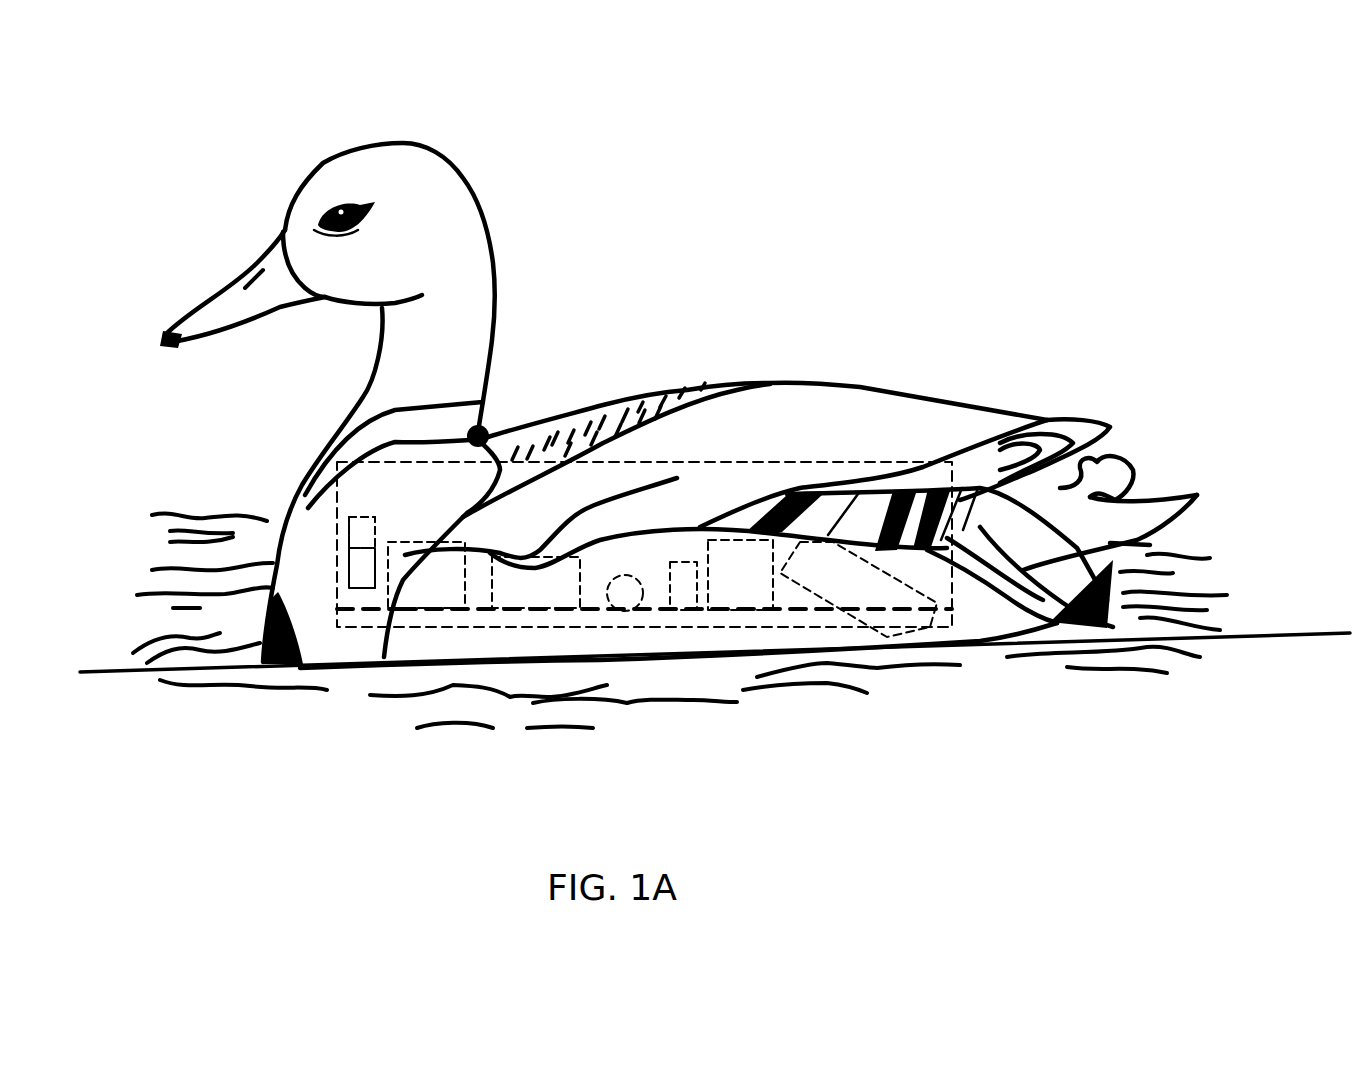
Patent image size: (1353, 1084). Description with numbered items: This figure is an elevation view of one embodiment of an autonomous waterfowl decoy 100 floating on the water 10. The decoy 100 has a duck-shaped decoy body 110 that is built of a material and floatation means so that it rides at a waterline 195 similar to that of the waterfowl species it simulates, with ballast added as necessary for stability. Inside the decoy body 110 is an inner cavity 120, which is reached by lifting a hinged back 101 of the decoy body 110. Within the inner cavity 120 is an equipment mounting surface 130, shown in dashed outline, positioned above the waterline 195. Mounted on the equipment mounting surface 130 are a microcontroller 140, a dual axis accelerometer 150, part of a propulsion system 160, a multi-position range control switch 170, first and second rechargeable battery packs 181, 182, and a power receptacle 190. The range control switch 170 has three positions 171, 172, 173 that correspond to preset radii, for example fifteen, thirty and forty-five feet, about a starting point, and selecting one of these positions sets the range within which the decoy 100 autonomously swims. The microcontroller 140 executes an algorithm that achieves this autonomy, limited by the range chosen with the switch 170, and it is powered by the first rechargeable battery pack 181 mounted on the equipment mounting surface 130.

The water 10 is at (140, 585).
The autonomous waterfowl decoy 100 is at (1043, 216).
The hinged back 101 is at (630, 400).
The decoy body 110 is at (1027, 421).
The inner cavity 120 is at (877, 463).
The equipment mounting surface 130 is at (363, 612).
The microcontroller 140 is at (530, 587).
The dual axis accelerometer 150 is at (683, 592).
The propulsion system 160 is at (912, 590).
The multi-position range control switch 170 is at (350, 520).
The switch position 171 is at (342, 525).
The switch position 172 is at (342, 563).
The switch position 173 is at (342, 602).
The first rechargeable battery pack 181 is at (423, 592).
The second rechargeable battery pack 182 is at (747, 588).
The power receptacle 190 is at (625, 600).
The waterline 195 is at (1323, 633).